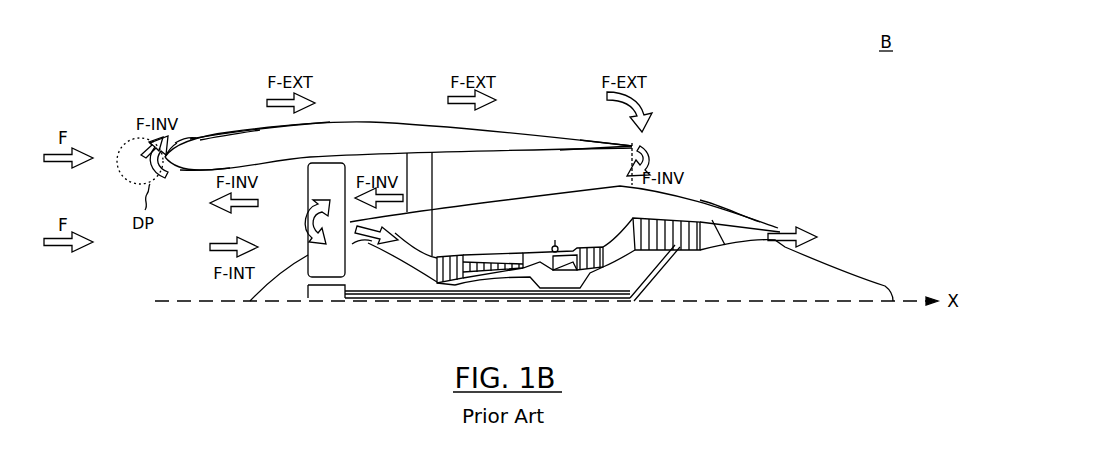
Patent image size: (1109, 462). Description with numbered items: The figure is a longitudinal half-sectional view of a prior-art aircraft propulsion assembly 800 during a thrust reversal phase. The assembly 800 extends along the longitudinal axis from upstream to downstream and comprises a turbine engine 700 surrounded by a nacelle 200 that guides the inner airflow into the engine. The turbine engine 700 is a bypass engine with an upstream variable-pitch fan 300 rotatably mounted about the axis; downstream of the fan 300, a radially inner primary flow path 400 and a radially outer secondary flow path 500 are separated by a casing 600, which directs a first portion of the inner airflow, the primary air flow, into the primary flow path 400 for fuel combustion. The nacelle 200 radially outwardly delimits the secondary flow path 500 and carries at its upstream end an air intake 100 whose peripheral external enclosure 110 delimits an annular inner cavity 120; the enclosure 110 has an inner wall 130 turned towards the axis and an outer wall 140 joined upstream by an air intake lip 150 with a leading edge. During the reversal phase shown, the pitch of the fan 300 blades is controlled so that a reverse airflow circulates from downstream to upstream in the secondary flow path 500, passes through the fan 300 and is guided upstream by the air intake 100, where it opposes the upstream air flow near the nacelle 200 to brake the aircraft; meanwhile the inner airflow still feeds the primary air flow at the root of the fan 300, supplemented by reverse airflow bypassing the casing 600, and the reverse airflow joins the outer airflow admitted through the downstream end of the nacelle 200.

The air intake 100 is at (110, 55).
The peripheral external enclosure 110 is at (217, 128).
The annular inner cavity 120 is at (217, 166).
The inner wall 130 is at (191, 173).
The outer wall 140 is at (192, 150).
The air intake lip 150 is at (150, 150).
The nacelle 200 is at (632, 138).
The fan 300 is at (328, 306).
The primary flow path 400 is at (450, 287).
The secondary flow path 500 is at (523, 187).
The casing 600 is at (523, 237).
The turbine engine 700 is at (740, 190).
The aircraft propulsion assembly 800 is at (690, 96).